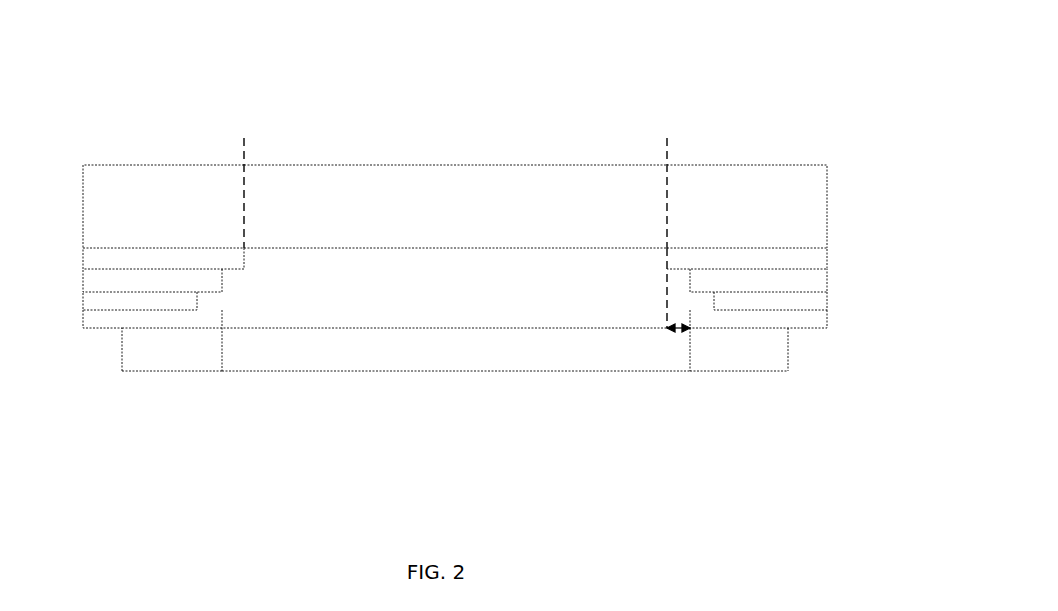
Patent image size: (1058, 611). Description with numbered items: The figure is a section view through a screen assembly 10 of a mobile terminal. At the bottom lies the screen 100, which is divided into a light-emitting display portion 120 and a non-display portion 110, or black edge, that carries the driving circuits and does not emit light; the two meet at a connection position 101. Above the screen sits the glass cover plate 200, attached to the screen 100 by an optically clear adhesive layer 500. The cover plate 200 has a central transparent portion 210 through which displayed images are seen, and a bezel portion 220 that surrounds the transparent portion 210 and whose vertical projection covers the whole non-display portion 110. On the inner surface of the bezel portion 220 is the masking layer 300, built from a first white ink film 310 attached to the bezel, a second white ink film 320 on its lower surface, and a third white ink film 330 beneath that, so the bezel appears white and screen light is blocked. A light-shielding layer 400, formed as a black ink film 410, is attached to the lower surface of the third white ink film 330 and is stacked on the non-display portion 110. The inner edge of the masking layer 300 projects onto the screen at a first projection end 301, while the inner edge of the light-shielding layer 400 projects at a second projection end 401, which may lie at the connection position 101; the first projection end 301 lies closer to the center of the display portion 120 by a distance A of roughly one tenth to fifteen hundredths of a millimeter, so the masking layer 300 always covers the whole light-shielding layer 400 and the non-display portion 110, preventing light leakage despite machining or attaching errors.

The screen assembly 10 is at (131, 382).
The screen 100 is at (364, 370).
The connection position 101 is at (688, 361).
The non-display portion 110 is at (745, 352).
The display portion 120 is at (483, 352).
The cover plate 200 is at (707, 101).
The transparent portion 210 is at (640, 192).
The bezel portion 220 is at (207, 198).
The masking layer 300 is at (882, 250).
The first projection end 301 is at (669, 329).
The first white ink film 310 is at (803, 258).
The second white ink film 320 is at (803, 282).
The third white ink film 330 is at (803, 302).
The light-shielding layer 400 is at (108, 322).
The second projection end 401 is at (690, 333).
The black ink film 410 is at (803, 327).
The optically clear adhesive layer 500 is at (457, 283).